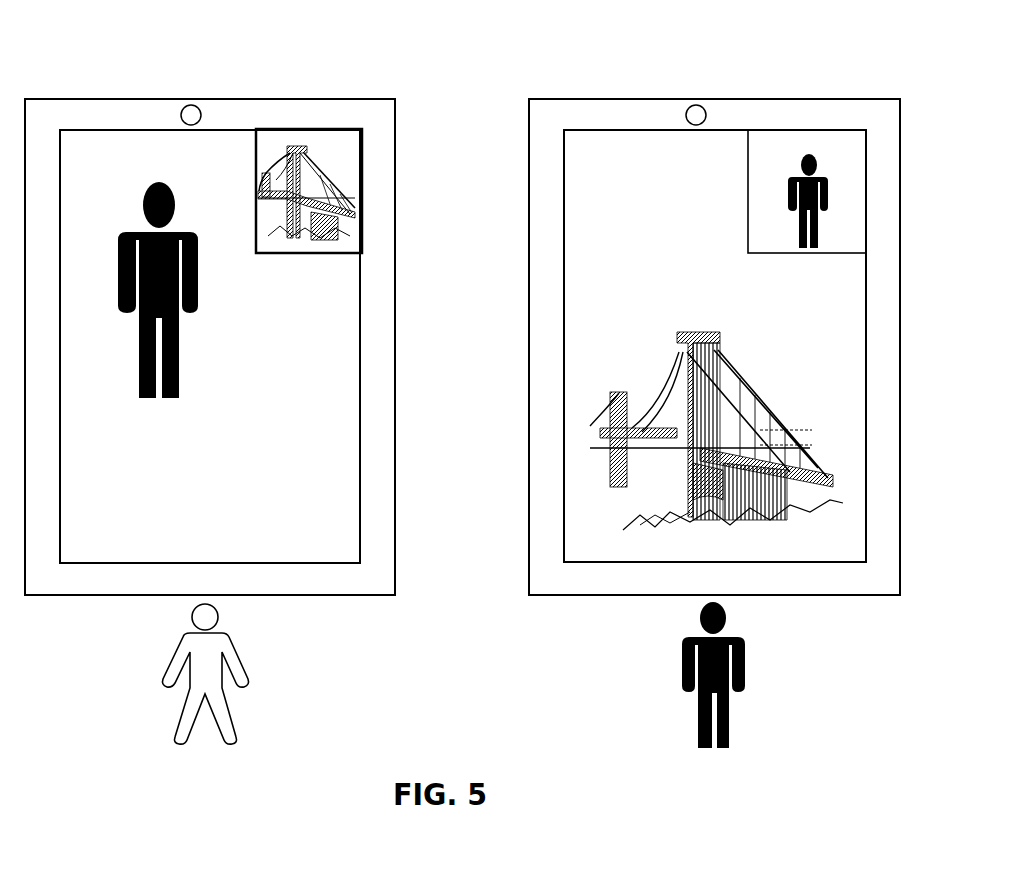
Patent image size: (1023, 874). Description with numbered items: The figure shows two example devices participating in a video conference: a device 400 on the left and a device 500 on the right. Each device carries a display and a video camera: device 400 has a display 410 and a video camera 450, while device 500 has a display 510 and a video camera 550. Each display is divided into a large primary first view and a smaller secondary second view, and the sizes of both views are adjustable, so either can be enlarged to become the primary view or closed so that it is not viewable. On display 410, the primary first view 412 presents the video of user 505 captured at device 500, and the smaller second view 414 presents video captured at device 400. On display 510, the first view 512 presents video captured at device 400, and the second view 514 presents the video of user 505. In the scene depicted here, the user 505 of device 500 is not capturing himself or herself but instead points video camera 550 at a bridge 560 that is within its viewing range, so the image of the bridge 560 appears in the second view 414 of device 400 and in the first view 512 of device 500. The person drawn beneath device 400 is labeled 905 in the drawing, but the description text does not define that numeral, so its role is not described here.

The device 400 is at (255, 84).
The display 410 is at (112, 129).
The video camera 450 is at (190, 110).
The first view 412 is at (335, 322).
The second view 414 is at (357, 227).
The device 500 is at (797, 73).
The display 510 is at (628, 129).
The video camera 550 is at (694, 109).
The second view 514 is at (850, 235).
The first view 512 is at (828, 297).
The bridge 560 is at (812, 332).
The first user 905 is at (220, 771).
The user 505 is at (728, 771).